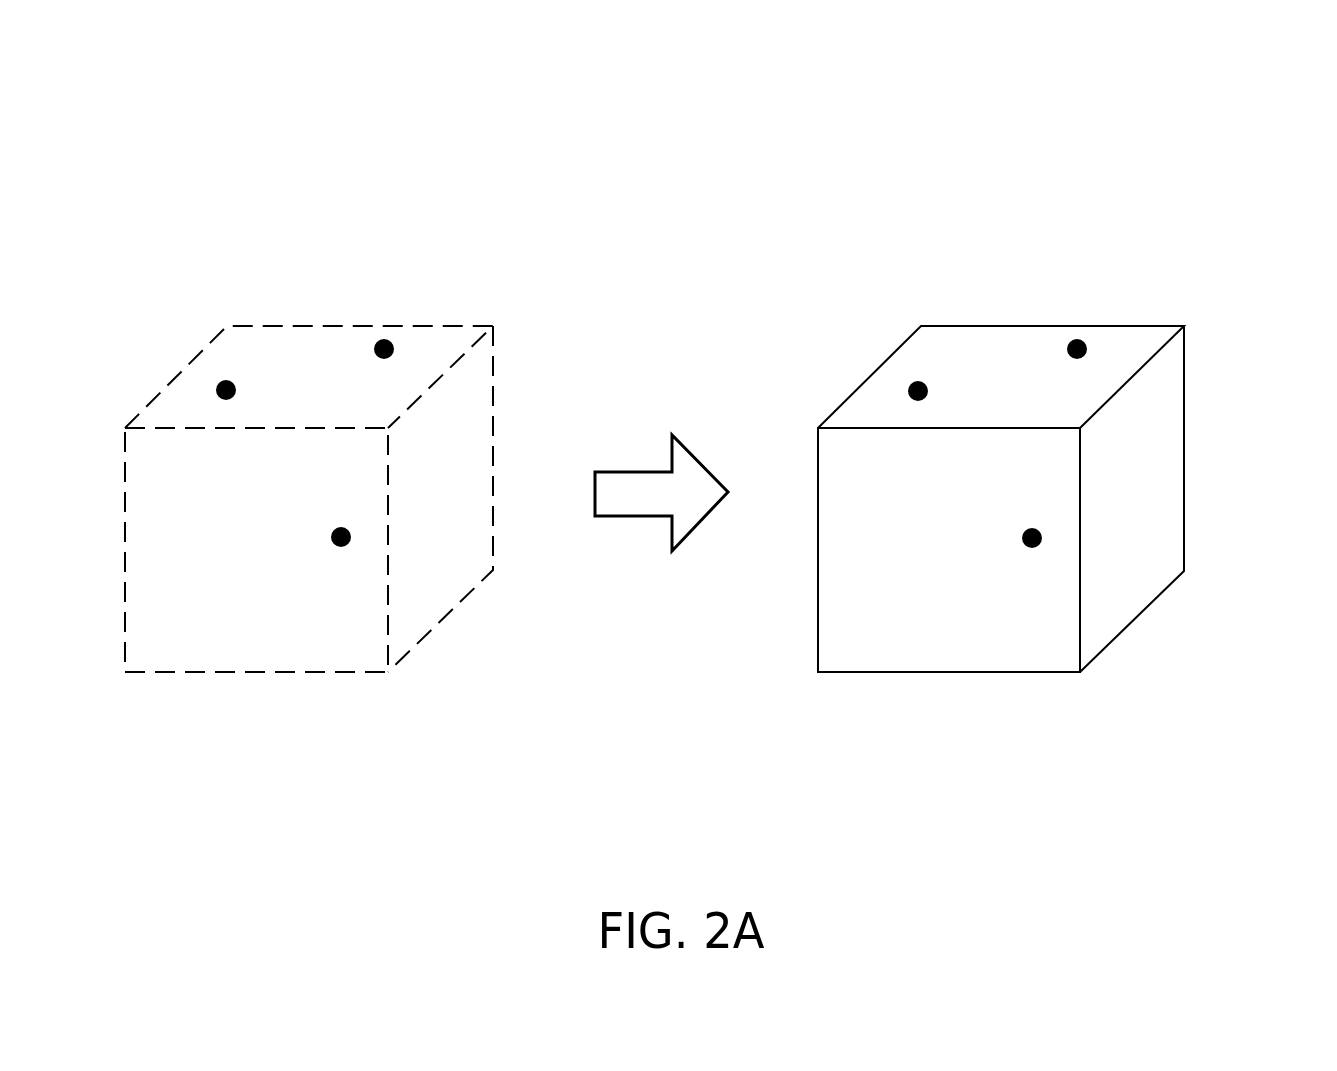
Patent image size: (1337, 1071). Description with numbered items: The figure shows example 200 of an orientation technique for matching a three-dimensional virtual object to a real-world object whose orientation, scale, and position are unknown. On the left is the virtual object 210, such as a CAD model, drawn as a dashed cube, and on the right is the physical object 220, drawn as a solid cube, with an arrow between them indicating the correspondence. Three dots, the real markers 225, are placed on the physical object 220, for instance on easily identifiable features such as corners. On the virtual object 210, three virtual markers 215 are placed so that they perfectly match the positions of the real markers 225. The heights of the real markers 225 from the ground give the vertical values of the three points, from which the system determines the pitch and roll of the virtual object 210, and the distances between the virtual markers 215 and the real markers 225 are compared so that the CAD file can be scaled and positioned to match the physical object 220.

The example 200 is at (1228, 77).
The virtual object 210 is at (309, 565).
The virtual markers 215 is at (229, 381).
The physical object 220 is at (1001, 564).
The real markers 225 is at (920, 381).